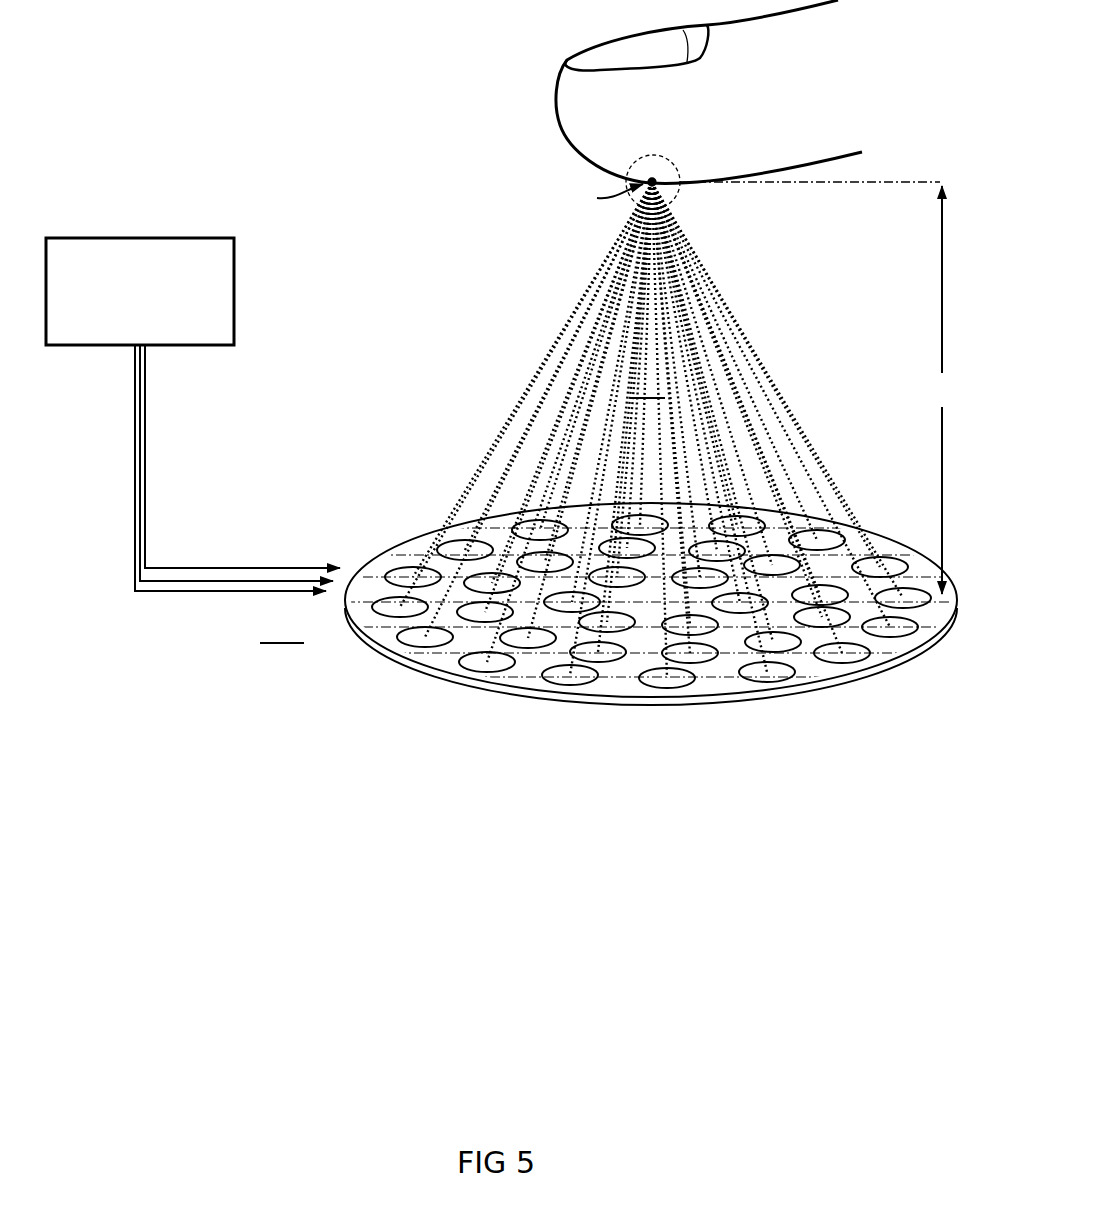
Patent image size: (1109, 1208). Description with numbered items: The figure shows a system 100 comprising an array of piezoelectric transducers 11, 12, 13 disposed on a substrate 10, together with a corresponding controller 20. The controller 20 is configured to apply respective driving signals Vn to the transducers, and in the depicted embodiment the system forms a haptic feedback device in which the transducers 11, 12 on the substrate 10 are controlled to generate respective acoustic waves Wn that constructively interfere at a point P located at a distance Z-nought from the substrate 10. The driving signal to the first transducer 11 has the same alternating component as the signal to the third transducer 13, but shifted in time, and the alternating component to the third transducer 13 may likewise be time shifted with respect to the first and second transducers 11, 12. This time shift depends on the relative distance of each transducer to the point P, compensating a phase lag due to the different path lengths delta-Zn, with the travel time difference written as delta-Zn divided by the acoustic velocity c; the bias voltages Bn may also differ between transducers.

The system 100 is at (124, 96).
The substrate 10 is at (810, 714).
The first transducer 11 is at (378, 767).
The second transducer 12 is at (397, 768).
The third transducer 13 is at (390, 768).
The controller 20 is at (154, 297).